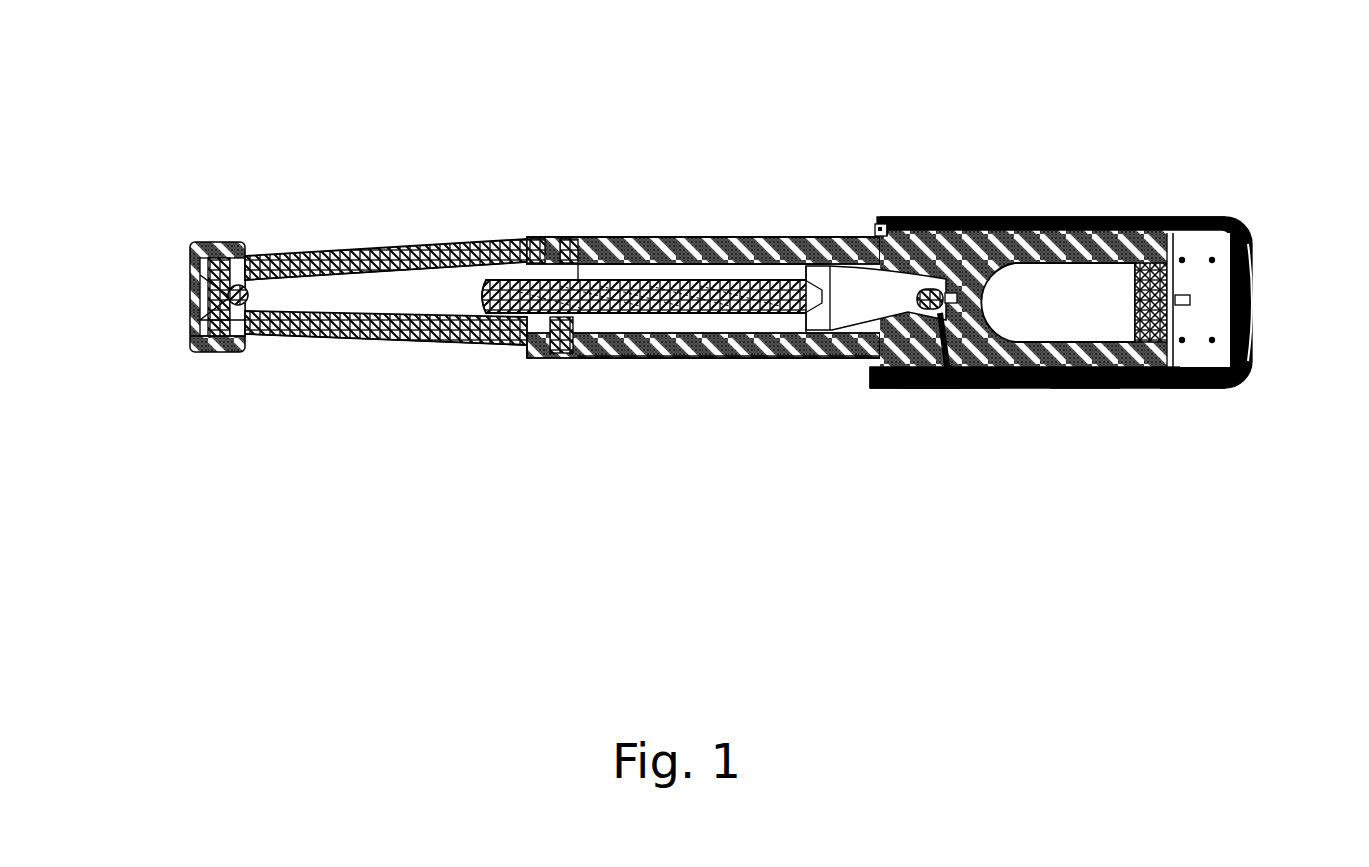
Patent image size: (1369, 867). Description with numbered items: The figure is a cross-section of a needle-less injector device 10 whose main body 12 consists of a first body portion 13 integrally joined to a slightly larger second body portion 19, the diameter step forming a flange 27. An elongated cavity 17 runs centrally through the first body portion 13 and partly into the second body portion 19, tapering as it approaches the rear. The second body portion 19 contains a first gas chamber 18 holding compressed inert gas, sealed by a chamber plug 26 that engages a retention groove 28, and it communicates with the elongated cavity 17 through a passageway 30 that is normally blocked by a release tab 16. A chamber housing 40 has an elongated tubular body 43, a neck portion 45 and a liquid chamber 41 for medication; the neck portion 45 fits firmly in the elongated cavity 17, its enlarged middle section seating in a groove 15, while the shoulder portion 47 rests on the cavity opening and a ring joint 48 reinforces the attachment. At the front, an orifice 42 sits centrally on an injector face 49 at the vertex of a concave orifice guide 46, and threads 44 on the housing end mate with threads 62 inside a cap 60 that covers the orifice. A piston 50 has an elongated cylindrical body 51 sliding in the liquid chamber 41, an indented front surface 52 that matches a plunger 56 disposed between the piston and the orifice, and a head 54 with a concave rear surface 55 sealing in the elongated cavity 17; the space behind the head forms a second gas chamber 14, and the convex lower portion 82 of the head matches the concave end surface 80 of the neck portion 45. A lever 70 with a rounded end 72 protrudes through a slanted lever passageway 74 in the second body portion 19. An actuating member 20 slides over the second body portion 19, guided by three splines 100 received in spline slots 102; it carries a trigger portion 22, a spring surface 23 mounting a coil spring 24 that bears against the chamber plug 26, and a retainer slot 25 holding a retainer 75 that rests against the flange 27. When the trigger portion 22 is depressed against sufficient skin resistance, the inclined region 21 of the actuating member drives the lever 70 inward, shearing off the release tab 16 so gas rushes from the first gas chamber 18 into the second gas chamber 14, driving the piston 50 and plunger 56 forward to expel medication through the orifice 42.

The needle-less injector device 10 is at (686, 232).
The main body 12 is at (673, 365).
The first body portion 13 is at (700, 352).
The second gas chamber 14 is at (862, 318).
The groove 15 is at (562, 252).
The release tab 16 is at (808, 293).
The elongated cavity 17 is at (647, 337).
The first gas chamber 18 is at (1025, 283).
The second body portion 19 is at (1085, 392).
The actuating member 20 is at (1080, 392).
The inclined region 21 is at (988, 386).
The trigger portion 22 is at (1258, 297).
The spring surface 23 is at (1217, 300).
The coil spring 24 is at (1197, 250).
The retainer slot 25 is at (878, 212).
The chamber plug 26 is at (1173, 395).
The flange 27 is at (870, 378).
The retention groove 28 is at (1145, 247).
The passageway 30 is at (952, 283).
The chamber housing 40 is at (348, 336).
The liquid chamber 41 is at (383, 283).
The orifice 42 is at (196, 300).
The elongated tubular body 43 is at (415, 335).
The threads 44 is at (285, 258).
The neck portion 45 is at (556, 333).
The orifice guide 46 is at (229, 352).
The shoulder portion 47 is at (508, 250).
The ring joint 48 is at (522, 358).
The injector face 49 is at (200, 322).
The piston 50 is at (745, 268).
The elongated cylindrical body 51 is at (721, 290).
The indented front surface 52 is at (477, 283).
The head 54 is at (806, 328).
The rear surface 55 is at (814, 316).
The plunger 56 is at (258, 292).
The cap 60 is at (200, 355).
The threads 62 is at (200, 270).
The lever 70 is at (932, 330).
The rounded end 72 is at (958, 372).
The lever passageway 74 is at (935, 382).
The retainer 75 is at (897, 218).
The end surface 80 is at (600, 272).
The lower portion 82 is at (790, 265).
The splines 100 is at (985, 217).
The spline slots 102 is at (1156, 212).